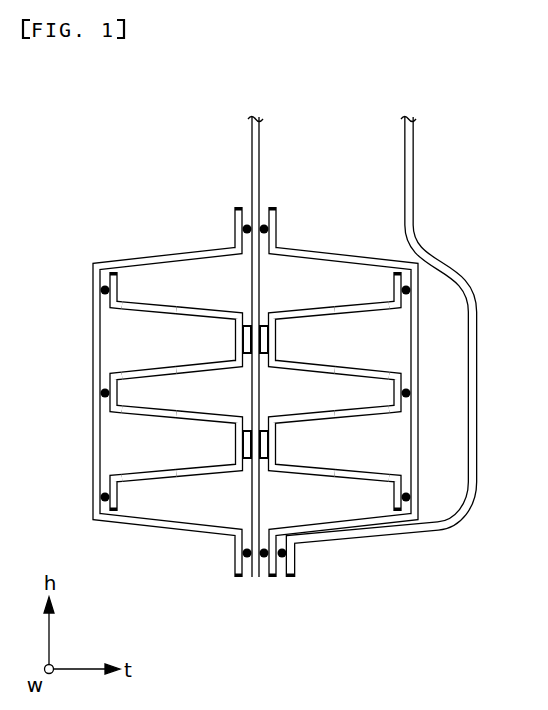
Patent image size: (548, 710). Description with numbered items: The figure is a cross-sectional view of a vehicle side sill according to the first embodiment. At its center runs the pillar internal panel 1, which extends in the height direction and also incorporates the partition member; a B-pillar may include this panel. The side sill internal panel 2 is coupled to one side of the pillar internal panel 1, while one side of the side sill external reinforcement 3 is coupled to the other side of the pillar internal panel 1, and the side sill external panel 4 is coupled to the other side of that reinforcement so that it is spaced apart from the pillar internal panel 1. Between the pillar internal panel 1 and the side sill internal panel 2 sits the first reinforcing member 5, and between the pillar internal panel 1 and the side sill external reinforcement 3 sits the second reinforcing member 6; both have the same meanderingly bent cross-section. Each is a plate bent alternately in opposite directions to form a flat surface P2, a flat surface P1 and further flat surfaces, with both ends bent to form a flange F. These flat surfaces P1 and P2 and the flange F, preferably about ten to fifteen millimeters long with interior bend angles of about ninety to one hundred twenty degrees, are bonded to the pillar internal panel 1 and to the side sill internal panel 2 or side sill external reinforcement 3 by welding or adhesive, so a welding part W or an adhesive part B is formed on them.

The pillar internal panel 1 is at (258, 161).
The side sill internal panel 2 is at (177, 260).
The side sill external reinforcement 3 is at (415, 319).
The side sill external panel 4 is at (473, 406).
The first reinforcing member 5 is at (142, 481).
The second reinforcing member 6 is at (322, 474).
The flange F is at (118, 290).
The adhesive part B is at (263, 326).
The welding part W is at (405, 287).
The flat surface P1 is at (118, 391).
The flat surface P2 is at (237, 340).